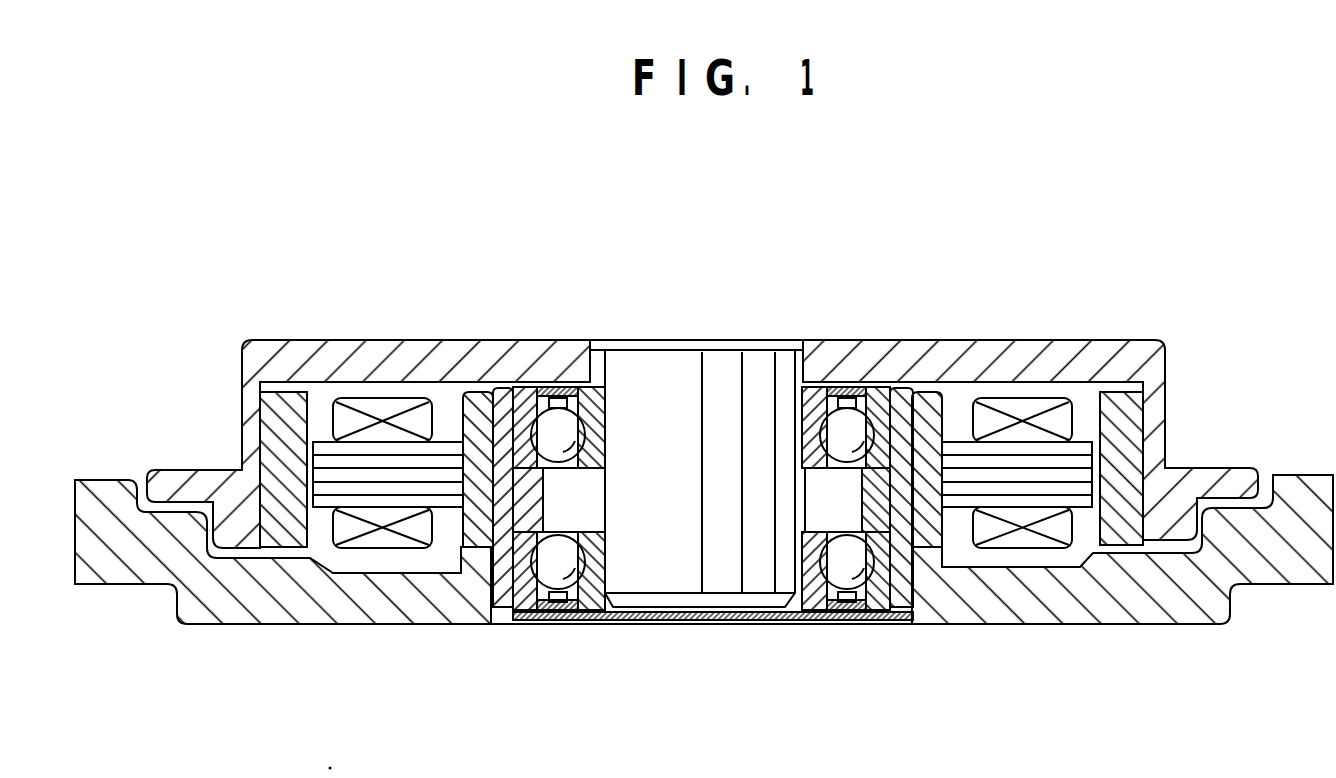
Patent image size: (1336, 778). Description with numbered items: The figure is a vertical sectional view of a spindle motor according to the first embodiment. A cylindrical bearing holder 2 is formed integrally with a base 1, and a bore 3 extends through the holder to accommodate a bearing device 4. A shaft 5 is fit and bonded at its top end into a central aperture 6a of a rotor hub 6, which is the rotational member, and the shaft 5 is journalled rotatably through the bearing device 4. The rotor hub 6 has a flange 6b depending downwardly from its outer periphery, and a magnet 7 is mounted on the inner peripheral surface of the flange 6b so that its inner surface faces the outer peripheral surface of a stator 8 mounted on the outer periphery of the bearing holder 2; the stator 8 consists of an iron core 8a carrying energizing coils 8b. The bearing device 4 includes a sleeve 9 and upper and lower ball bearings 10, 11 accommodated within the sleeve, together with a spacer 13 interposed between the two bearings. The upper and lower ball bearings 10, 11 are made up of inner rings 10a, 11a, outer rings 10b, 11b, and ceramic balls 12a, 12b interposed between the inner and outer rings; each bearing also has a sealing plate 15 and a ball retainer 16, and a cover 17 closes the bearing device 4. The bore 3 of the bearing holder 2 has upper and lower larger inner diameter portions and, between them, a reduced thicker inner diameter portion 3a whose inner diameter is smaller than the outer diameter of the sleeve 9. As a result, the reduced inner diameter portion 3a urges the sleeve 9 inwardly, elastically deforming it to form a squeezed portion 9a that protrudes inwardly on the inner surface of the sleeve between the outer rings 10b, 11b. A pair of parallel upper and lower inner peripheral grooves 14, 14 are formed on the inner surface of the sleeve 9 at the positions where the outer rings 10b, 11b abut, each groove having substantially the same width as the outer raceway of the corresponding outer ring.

The base 1 is at (1085, 612).
The bearing holder 2 is at (912, 392).
The bore 3 is at (888, 390).
The reduced inner diameter portion 3a is at (573, 502).
The bearing device 4 is at (848, 383).
The shaft 5 is at (683, 367).
The rotor hub 6 is at (1020, 340).
The central aperture 6a is at (790, 365).
The flange 6b is at (1163, 423).
The magnet 7 is at (1130, 458).
The stator 8 is at (963, 531).
The iron core 8a is at (1003, 485).
The energizing coils 8b is at (1035, 537).
The sleeve 9 is at (503, 565).
The squeezed portion 9a is at (547, 490).
The upper ball bearing 10 is at (548, 385).
The inner ring 10a is at (567, 420).
The outer ring 10b is at (520, 387).
The lower ball bearing 11 is at (560, 603).
The inner ring 11a is at (588, 598).
The outer ring 11b is at (518, 607).
The balls 12a is at (562, 387).
The balls 12b is at (560, 612).
The spacer 13 is at (862, 507).
The inner peripheral grooves 14 is at (880, 387).
The sealing plate 15 is at (857, 383).
The ball retainer 16 is at (843, 396).
The cover 17 is at (750, 621).